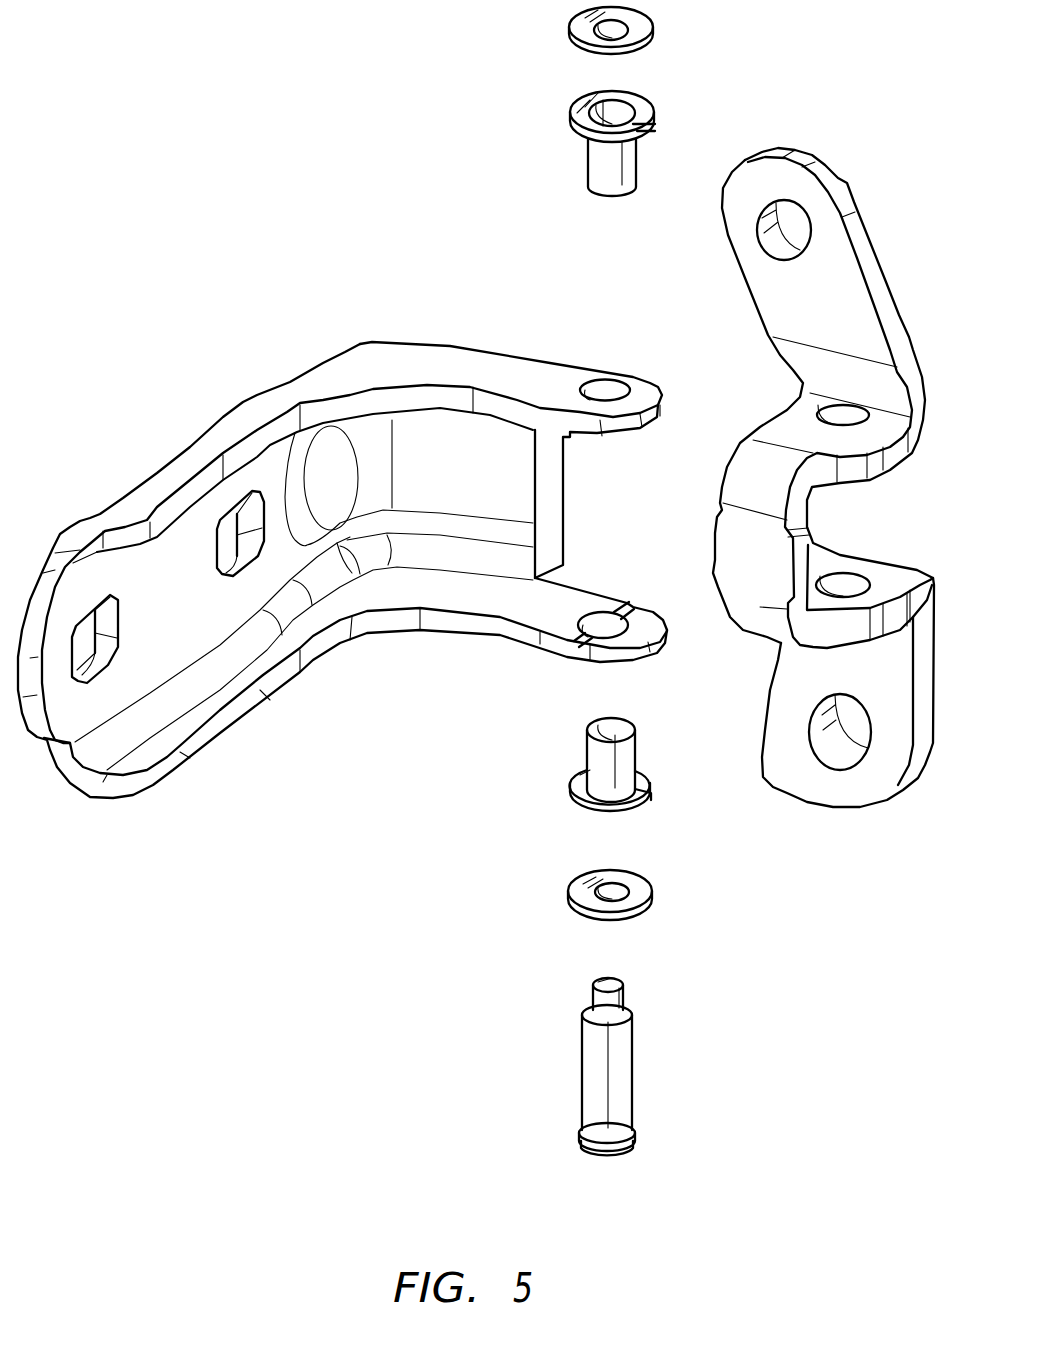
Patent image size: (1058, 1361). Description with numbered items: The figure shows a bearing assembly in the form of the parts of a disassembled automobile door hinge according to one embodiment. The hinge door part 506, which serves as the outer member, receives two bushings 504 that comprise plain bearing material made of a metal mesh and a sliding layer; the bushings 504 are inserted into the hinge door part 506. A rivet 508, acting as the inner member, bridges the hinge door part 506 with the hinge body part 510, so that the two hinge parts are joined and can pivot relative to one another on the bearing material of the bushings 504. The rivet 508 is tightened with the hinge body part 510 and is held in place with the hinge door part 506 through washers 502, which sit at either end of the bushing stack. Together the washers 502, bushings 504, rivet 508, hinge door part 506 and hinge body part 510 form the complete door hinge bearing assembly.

The washers 502 is at (569, 35).
The bushings 504 is at (640, 157).
The hinge door part 506 is at (447, 345).
The rivet 508 is at (635, 1107).
The hinge body part 510 is at (848, 180).